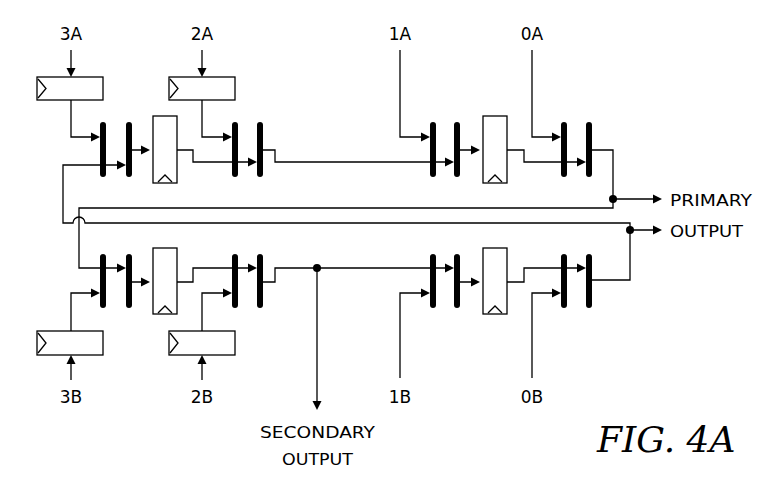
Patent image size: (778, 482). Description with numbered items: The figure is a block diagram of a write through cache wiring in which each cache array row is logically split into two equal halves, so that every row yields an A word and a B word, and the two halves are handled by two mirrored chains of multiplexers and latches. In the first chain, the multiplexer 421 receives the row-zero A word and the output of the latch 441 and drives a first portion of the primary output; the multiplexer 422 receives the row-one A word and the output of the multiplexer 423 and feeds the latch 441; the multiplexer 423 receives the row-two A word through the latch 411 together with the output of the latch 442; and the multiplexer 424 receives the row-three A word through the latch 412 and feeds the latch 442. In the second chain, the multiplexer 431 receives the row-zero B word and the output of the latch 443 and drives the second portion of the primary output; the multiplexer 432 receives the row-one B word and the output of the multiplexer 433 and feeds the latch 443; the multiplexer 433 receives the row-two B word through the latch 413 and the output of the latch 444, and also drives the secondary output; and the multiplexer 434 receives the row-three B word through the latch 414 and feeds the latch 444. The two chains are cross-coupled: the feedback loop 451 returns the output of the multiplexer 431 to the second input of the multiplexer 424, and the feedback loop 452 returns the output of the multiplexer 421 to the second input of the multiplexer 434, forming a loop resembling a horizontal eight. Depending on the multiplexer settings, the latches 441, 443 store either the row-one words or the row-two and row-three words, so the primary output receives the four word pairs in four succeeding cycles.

The latch 411 is at (218, 77).
The latch 412 is at (87, 77).
The latch 413 is at (218, 355).
The latch 414 is at (87, 355).
The multiplexer 421 is at (573, 122).
The multiplexer 422 is at (442, 122).
The multiplexer 423 is at (249, 122).
The multiplexer 424 is at (118, 122).
The multiplexer 431 is at (573, 308).
The multiplexer 432 is at (442, 308).
The multiplexer 433 is at (250, 308).
The multiplexer 434 is at (119, 308).
The latch 441 is at (495, 183).
The latch 442 is at (165, 183).
The latch 443 is at (497, 248).
The latch 444 is at (163, 248).
The feedback loop 451 is at (63, 184).
The feedback loop 452 is at (78, 243).